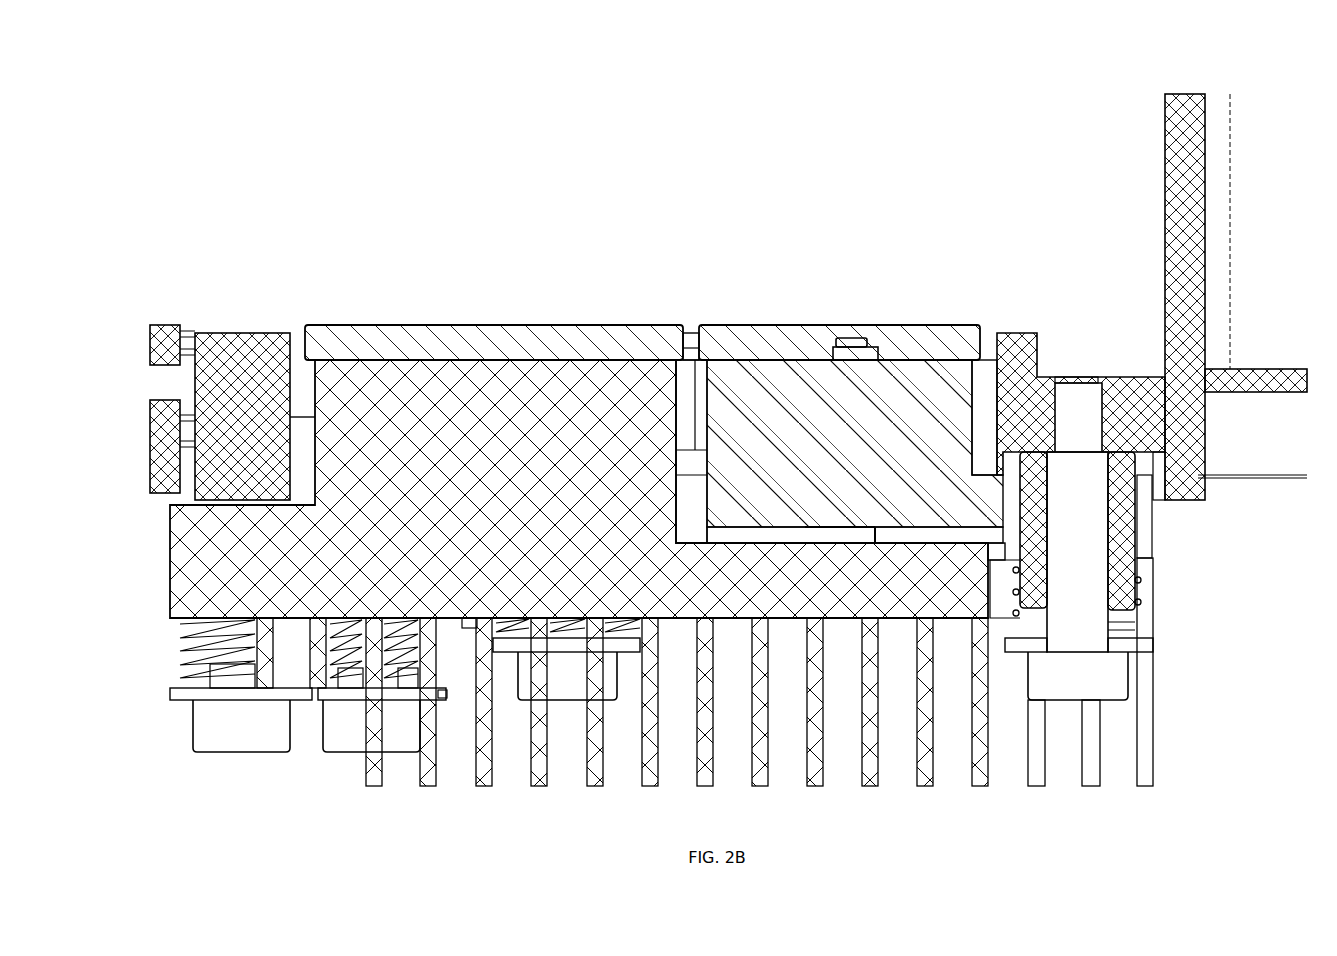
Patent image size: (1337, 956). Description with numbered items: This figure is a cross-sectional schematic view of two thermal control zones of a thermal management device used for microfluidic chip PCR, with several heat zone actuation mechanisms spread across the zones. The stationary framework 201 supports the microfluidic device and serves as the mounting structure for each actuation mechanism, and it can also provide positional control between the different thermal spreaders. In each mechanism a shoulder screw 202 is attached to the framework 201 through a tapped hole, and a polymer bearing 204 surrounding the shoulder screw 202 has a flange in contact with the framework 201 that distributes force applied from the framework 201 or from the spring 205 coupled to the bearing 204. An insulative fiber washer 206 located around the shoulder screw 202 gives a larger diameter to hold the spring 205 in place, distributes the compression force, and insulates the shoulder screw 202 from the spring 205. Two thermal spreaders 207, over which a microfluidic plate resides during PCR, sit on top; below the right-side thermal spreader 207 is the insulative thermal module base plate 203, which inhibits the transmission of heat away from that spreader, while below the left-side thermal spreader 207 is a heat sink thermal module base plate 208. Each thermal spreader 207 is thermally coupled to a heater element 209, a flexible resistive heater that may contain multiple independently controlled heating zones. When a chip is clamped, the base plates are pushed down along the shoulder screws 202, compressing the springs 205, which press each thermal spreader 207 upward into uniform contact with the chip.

The framework 201 is at (1165, 355).
The shoulder screw 202 is at (403, 737).
The thermal module base plate 203 is at (945, 410).
The polymer bearing 204 is at (225, 625).
The spring 205 is at (243, 658).
The insulative fiber washer 206 is at (397, 697).
The thermal spreader 207 is at (592, 327).
The heat sink thermal module base plate 208 is at (455, 440).
The heater element 209 is at (692, 327).